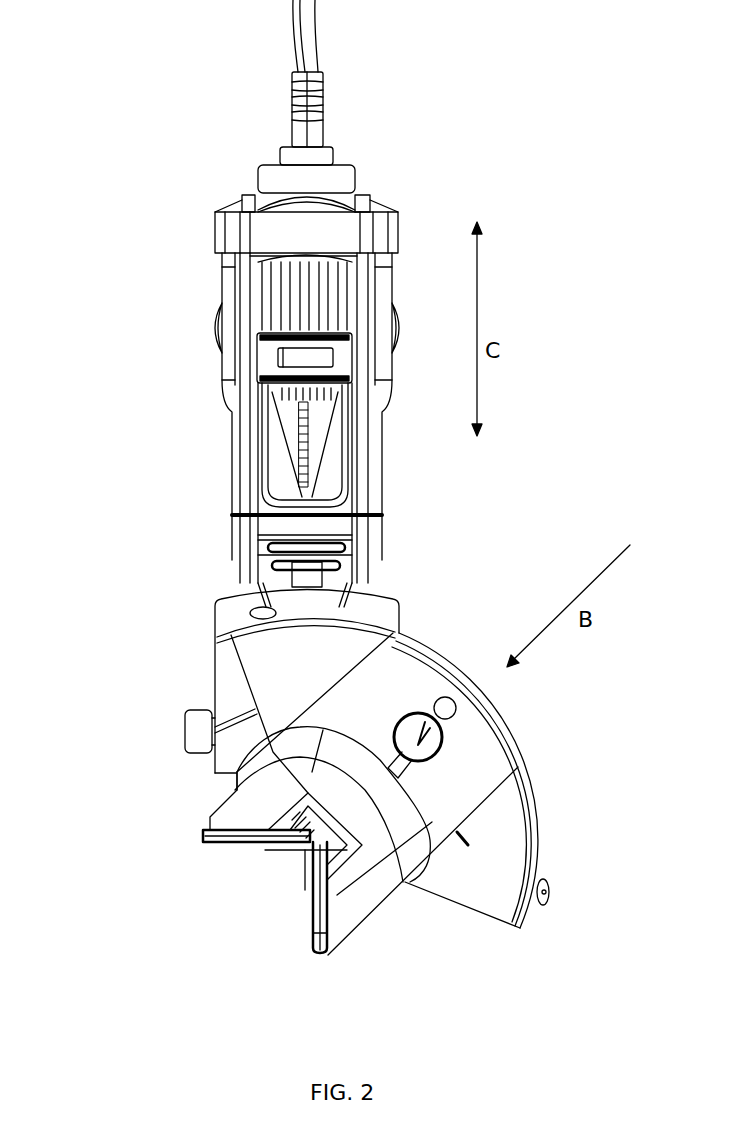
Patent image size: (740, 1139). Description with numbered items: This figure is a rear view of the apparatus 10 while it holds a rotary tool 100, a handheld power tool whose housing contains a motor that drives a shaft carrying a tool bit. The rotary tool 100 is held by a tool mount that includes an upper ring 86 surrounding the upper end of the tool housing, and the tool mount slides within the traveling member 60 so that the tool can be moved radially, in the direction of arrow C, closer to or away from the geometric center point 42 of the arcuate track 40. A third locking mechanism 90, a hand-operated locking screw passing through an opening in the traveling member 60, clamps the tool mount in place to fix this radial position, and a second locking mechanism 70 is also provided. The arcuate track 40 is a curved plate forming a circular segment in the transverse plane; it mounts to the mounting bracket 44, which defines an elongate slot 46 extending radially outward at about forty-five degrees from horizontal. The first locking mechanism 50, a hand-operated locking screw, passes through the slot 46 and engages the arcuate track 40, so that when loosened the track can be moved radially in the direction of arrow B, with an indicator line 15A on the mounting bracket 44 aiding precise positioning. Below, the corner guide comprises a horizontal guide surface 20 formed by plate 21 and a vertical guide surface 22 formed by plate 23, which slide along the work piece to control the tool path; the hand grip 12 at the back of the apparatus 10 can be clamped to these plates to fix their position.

The apparatus 10 is at (125, 428).
The upper ring 86 is at (215, 232).
The rotary tool 100 is at (398, 368).
The traveling member 60 is at (215, 627).
The second locking mechanism 70 is at (308, 574).
The first locking mechanism 50 is at (420, 735).
The elongate slot 46 is at (457, 720).
The mounting bracket 44 is at (528, 752).
The arcuate track 40 is at (466, 794).
The third locking mechanism 90 is at (185, 728).
The hand grip 12 is at (397, 885).
The indicator line 15A is at (468, 858).
The horizontal guide surface 20 is at (241, 900).
The plate 21 is at (208, 827).
The vertical guide surface 22 is at (290, 927).
The plate 23 is at (320, 954).
The geometric center point 42 is at (305, 851).